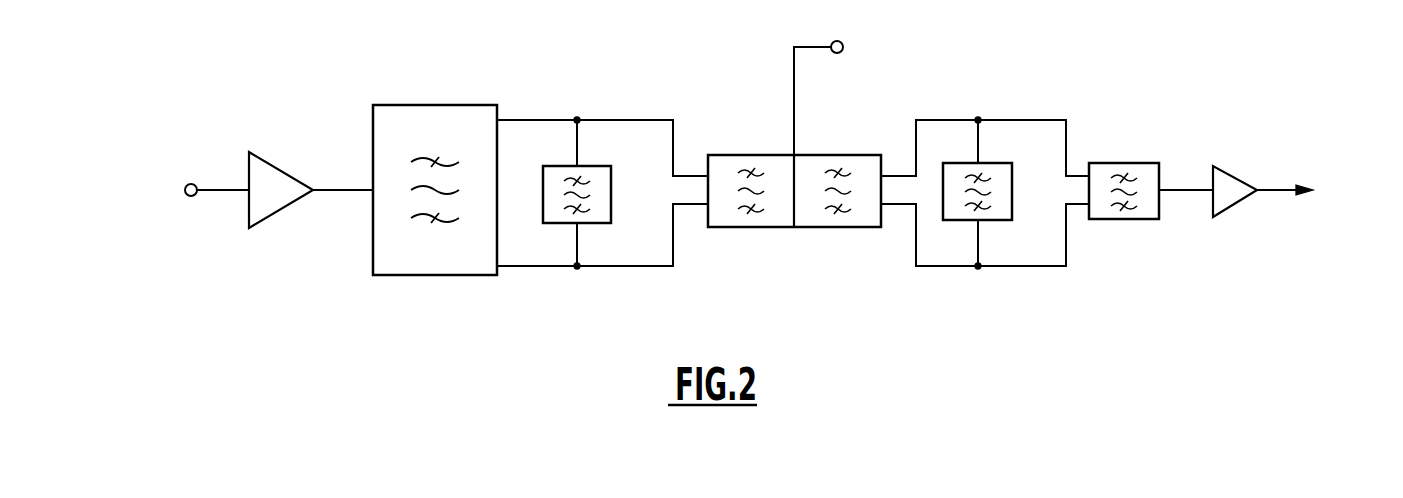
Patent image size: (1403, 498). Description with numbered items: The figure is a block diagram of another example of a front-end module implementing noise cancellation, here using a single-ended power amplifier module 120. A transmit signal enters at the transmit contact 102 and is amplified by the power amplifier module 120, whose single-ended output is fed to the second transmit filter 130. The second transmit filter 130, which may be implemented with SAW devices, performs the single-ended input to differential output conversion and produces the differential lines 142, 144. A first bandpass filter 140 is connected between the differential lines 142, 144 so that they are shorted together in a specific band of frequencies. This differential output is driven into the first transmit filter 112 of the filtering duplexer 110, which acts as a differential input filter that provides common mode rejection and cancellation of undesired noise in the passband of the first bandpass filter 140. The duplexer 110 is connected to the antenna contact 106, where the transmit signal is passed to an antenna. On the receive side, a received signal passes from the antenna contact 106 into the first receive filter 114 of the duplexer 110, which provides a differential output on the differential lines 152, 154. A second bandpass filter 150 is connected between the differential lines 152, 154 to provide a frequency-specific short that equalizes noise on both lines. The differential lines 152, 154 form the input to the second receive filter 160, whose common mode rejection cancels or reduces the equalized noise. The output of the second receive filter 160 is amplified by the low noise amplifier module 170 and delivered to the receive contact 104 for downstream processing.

The transmit contact 102 is at (192, 183).
The receive contact 104 is at (1313, 190).
The antenna contact 106 is at (843, 42).
The filtering duplexer 110 is at (793, 204).
The first transmit filter 112 is at (753, 154).
The first receive filter 114 is at (818, 155).
The single-ended power amplifier module 120 is at (264, 158).
The second transmit filter 130 is at (428, 105).
The first bandpass filter 140 is at (584, 224).
The differential line 142 is at (557, 119).
The differential line 144 is at (558, 268).
The second bandpass filter 150 is at (986, 221).
The differential line 152 is at (957, 118).
The differential line 154 is at (958, 268).
The second receive filter 160 is at (1118, 163).
The low noise amplifier module 170 is at (1233, 172).